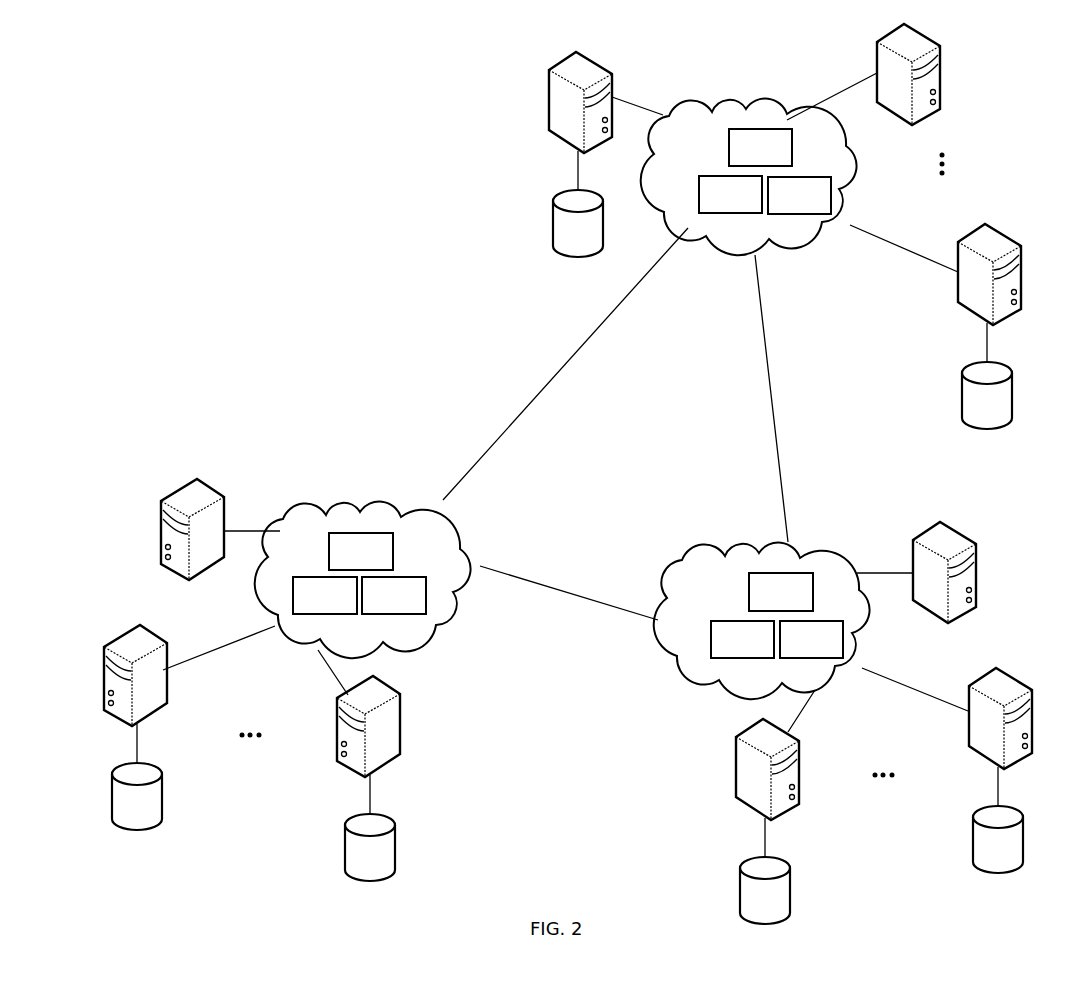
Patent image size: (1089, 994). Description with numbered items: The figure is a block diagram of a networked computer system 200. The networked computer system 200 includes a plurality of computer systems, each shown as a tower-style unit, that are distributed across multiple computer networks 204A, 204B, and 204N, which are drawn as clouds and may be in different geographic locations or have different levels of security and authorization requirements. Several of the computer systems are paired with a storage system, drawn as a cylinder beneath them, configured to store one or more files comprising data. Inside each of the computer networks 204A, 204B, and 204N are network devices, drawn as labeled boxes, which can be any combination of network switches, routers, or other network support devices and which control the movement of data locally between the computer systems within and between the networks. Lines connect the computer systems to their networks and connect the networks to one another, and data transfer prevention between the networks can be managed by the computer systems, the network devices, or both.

The networked computer system 200 is at (205, 150).
The computer network 204A is at (690, 102).
The computer network 204B is at (350, 503).
The computer network 204N is at (700, 542).